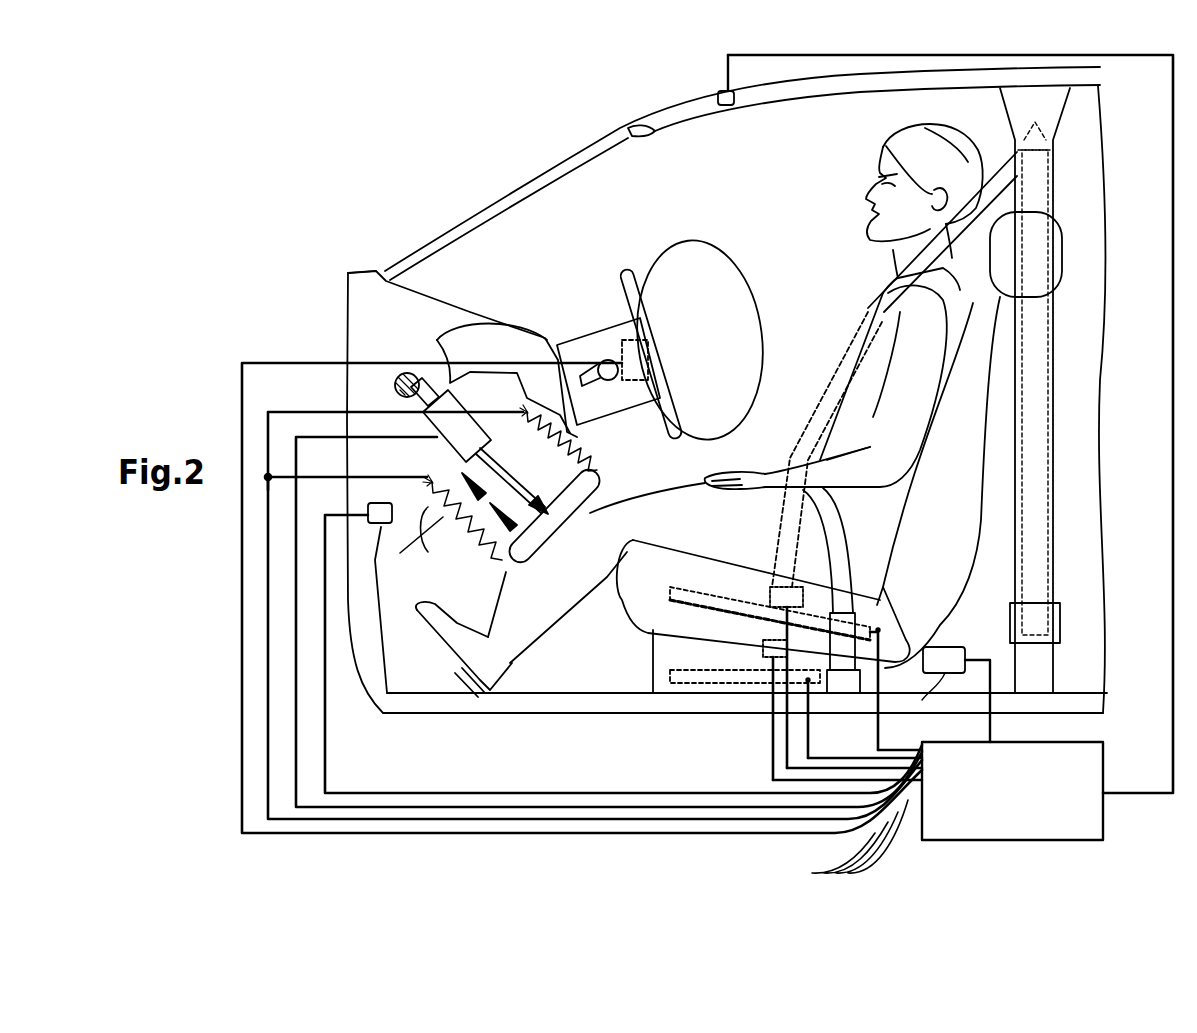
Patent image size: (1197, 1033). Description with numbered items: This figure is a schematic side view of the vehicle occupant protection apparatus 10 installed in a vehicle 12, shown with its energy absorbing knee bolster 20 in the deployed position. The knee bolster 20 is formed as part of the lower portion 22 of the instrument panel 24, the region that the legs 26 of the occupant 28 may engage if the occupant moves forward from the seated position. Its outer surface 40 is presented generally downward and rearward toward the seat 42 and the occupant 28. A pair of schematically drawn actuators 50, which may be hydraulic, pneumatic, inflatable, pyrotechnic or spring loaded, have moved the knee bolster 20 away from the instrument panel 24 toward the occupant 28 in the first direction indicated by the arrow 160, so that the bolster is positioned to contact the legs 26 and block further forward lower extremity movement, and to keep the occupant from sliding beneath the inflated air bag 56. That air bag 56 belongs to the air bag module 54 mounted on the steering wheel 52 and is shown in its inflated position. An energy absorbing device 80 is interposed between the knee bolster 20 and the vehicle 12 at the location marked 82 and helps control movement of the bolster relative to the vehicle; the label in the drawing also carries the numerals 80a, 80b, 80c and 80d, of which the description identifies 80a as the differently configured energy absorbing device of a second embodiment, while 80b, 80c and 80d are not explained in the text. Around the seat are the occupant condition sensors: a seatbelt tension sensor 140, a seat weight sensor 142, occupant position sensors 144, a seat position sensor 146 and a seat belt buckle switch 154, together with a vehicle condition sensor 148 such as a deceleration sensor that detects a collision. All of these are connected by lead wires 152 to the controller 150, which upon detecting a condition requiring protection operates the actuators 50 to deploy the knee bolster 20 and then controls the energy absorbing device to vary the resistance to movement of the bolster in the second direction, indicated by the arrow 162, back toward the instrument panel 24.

The apparatus 10 is at (332, 352).
The vehicle 12 is at (402, 219).
The knee bolster 20 is at (588, 485).
The lower portion 22 is at (518, 572).
The instrument panel 24 is at (496, 346).
The legs 26 is at (613, 521).
The occupant 28 is at (874, 358).
The outer surface 40 is at (567, 543).
The seat 42 is at (985, 413).
The actuators 50 is at (546, 452).
The steering wheel 52 is at (625, 284).
The air bag module 54 is at (624, 334).
The air bag 56 is at (720, 282).
The energy absorbing device 80 is at (477, 425).
The energy absorbing device 80a is at (457, 426).
The actuator piston 80b is at (425, 392).
The actuator spring 80c is at (562, 441).
The actuator spring 80d is at (467, 521).
The location 82 is at (406, 372).
The seatbelt tension sensor 140 is at (768, 675).
The seat weight sensor 142 is at (668, 592).
The occupant position sensors 144 is at (383, 528).
The seat position sensor 146 is at (668, 692).
The vehicle condition sensor 148 is at (918, 700).
The controller 150 is at (1007, 822).
The lead wires 152 is at (990, 725).
The seat belt buckle switch 154 is at (773, 603).
The arrow 160 is at (493, 530).
The arrow 162 is at (467, 503).